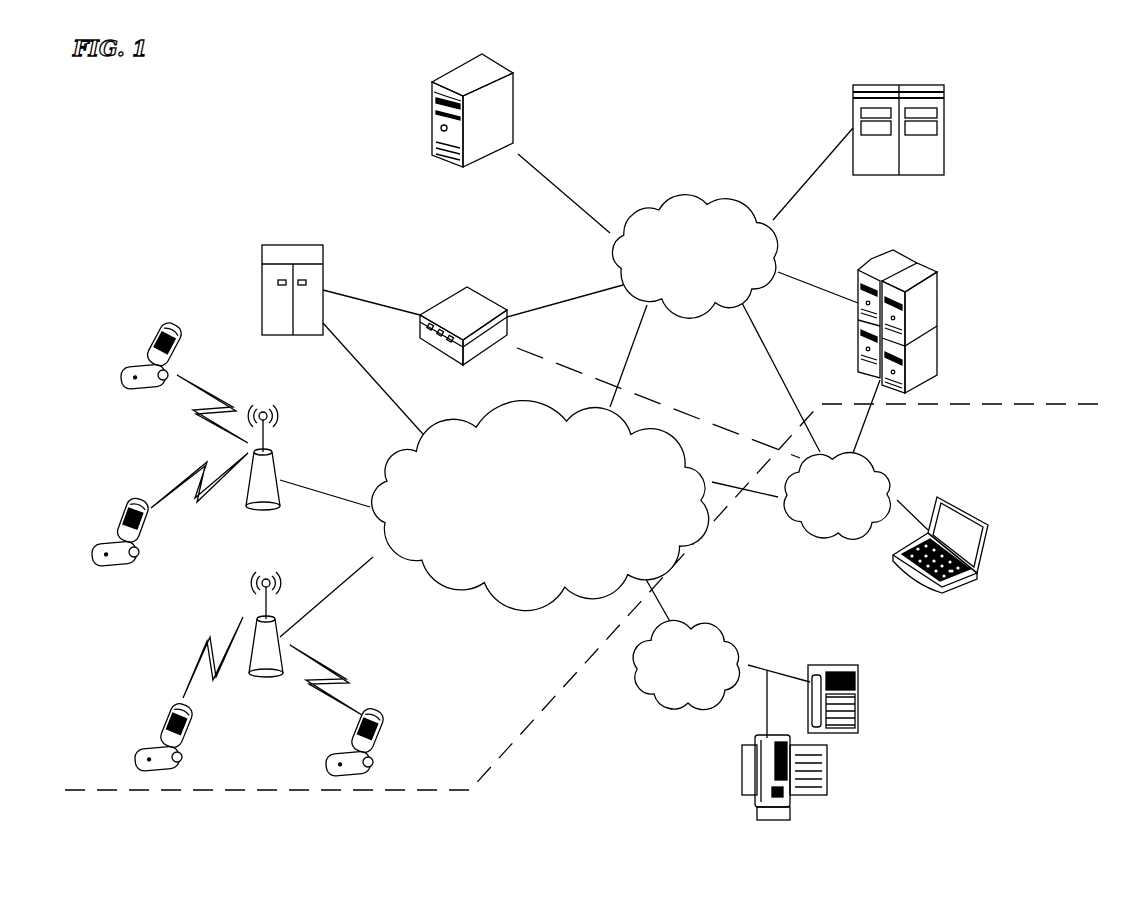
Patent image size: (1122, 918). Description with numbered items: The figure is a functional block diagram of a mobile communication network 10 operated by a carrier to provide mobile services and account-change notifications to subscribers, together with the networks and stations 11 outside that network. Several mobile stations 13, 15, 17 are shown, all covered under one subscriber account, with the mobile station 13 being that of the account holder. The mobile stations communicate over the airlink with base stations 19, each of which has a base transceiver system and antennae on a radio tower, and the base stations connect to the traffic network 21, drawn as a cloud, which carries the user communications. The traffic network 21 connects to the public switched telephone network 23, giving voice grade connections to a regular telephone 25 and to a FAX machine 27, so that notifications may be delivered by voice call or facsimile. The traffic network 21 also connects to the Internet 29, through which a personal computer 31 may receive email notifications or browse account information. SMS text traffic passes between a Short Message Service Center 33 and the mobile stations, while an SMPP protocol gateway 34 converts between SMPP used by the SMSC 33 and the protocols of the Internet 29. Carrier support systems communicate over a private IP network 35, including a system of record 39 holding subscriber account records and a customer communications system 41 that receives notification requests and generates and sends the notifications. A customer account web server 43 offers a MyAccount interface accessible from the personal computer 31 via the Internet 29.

The mobile communication network 10 is at (279, 137).
The networks and stations outside the mobile communication network 11 is at (582, 569).
The mobile station 13 is at (148, 345).
The mobile station 15 is at (145, 745).
The mobile station 17 is at (385, 725).
The base station 19 is at (267, 450).
The traffic network 21 is at (522, 593).
The public switched telephone network 23 is at (648, 695).
The telephone 25 is at (860, 685).
The FAX machine 27 is at (743, 775).
The Internet 29 is at (888, 474).
The personal computer 31 is at (965, 507).
The Short Message Service Center 33 is at (262, 288).
The SMPP protocol gateway 34 is at (452, 293).
The private IP packet data network 35 is at (607, 268).
The system of record 39 is at (432, 122).
The customer communications system 41 is at (898, 85).
The customer account web server 43 is at (912, 262).